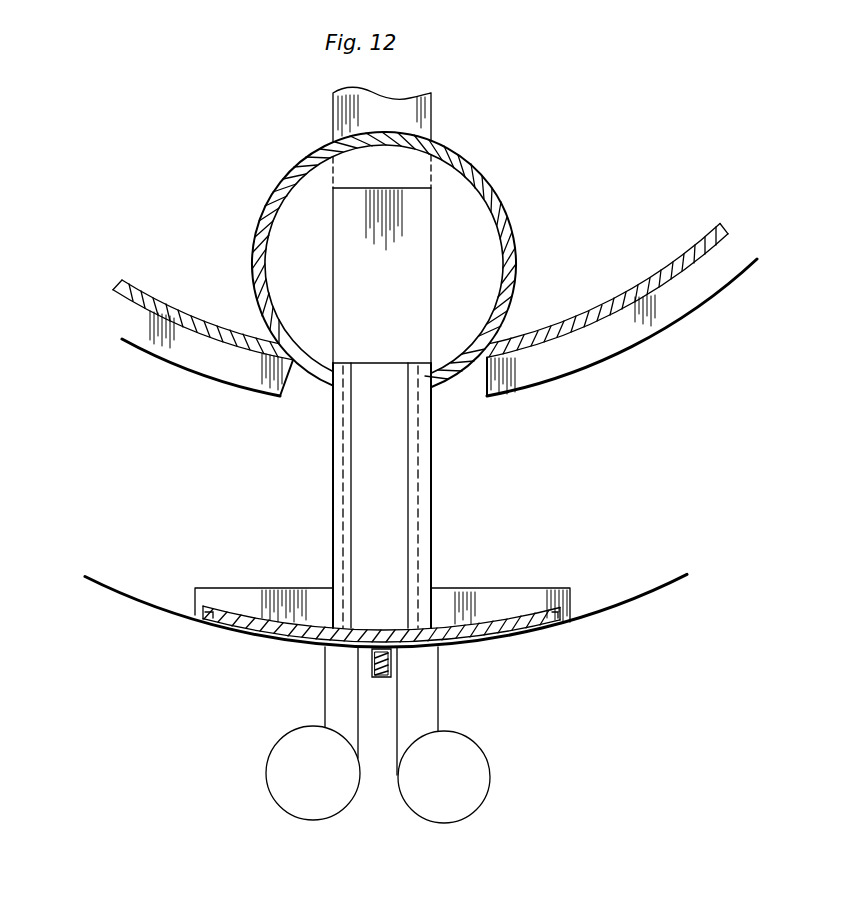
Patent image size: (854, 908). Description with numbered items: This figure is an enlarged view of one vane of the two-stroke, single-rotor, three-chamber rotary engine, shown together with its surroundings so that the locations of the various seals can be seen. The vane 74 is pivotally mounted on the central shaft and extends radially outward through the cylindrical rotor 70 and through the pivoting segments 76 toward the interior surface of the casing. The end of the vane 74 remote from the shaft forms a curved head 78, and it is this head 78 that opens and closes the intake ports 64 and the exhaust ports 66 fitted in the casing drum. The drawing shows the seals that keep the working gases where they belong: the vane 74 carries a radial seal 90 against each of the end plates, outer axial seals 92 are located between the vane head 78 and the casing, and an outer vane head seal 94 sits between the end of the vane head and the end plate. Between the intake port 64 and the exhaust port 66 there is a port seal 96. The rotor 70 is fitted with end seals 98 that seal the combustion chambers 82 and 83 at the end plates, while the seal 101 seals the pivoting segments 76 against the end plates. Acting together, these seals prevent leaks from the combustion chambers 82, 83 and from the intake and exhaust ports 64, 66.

The rotor 70 is at (580, 174).
The pivoting segments 76 is at (470, 270).
The seal 101 is at (507, 263).
The end seals 98 is at (598, 313).
The combustion chamber 83 is at (250, 474).
The combustion chamber 82 is at (652, 464).
The vane 74 is at (395, 474).
The radial seal 90 is at (351, 496).
The curved head 78 is at (455, 602).
The outer axial seals 92 is at (555, 623).
The outer vane head seal 94 is at (510, 627).
The intake ports 64 is at (333, 697).
The exhaust ports 66 is at (425, 707).
The port seal 96 is at (382, 679).